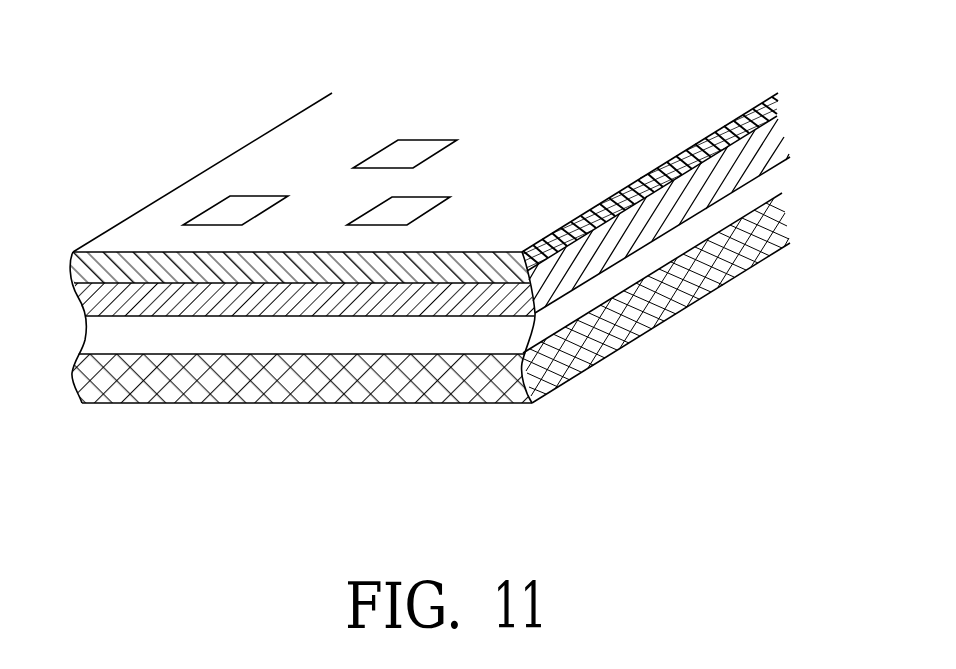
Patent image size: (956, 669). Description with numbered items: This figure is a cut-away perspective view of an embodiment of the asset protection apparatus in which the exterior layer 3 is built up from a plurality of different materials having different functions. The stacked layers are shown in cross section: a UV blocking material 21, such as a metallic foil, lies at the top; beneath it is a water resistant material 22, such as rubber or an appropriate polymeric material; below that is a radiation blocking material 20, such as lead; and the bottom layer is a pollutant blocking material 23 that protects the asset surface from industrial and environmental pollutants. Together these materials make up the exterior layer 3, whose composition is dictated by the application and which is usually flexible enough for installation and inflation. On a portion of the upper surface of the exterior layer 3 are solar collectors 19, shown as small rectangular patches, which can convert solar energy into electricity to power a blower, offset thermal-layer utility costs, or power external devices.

The exterior layer 3 is at (72, 252).
The solar collectors 19 is at (398, 155).
The radiation blocking material 20 is at (680, 242).
The UV blocking material 21 is at (588, 207).
The water resistant material 22 is at (595, 263).
The pollutant blocking material 23 is at (580, 355).